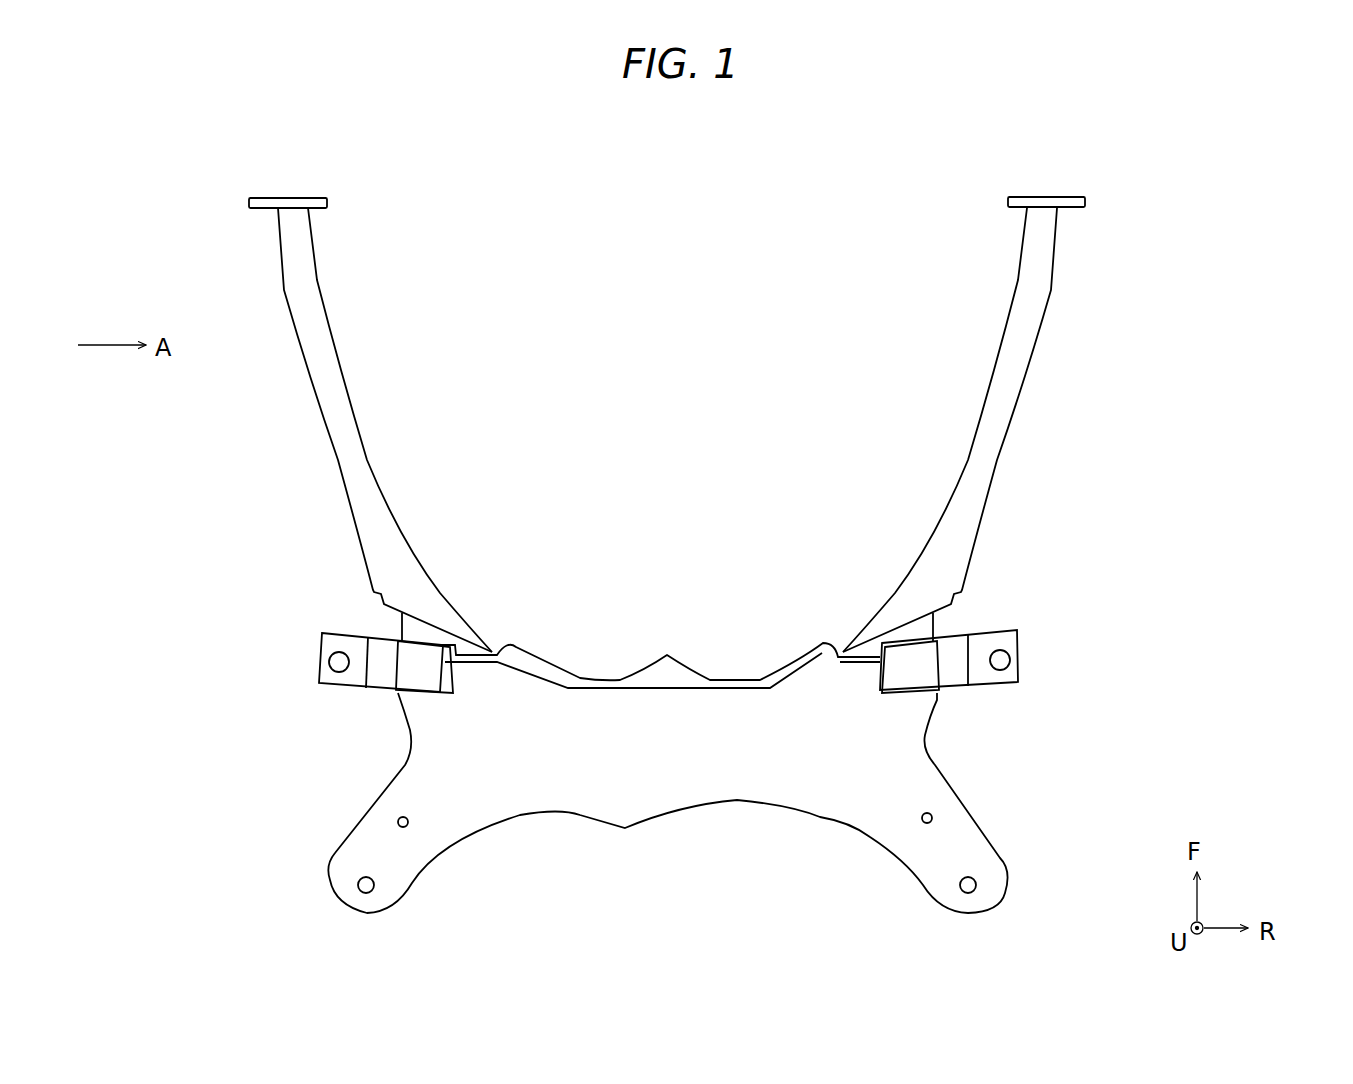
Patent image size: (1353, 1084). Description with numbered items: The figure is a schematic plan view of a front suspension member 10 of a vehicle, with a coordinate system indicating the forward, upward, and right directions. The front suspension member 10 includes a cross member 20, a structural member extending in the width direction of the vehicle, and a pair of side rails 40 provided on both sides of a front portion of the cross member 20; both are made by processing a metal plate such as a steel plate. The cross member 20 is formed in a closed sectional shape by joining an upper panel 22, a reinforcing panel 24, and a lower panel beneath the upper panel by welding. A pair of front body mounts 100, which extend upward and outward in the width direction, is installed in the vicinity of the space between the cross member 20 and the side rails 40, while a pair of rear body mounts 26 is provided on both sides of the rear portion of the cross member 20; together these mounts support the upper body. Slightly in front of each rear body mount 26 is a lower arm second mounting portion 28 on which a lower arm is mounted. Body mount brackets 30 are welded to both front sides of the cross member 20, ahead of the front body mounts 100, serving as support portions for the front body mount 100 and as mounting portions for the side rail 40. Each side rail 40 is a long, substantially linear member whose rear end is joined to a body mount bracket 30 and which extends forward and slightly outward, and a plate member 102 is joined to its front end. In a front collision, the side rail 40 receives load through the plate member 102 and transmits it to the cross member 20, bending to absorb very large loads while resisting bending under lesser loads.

The front suspension member 10 is at (1185, 305).
The cross member 20 is at (946, 769).
The upper panel 22 is at (680, 800).
The reinforcing panel 24 is at (683, 663).
The rear body mount 26 is at (347, 878).
The lower arm second mounting portion 28 is at (398, 822).
The body mount bracket 30 is at (484, 648).
The side rail 40 is at (334, 463).
The front body mount 100 is at (318, 657).
The plate member 102 is at (316, 197).